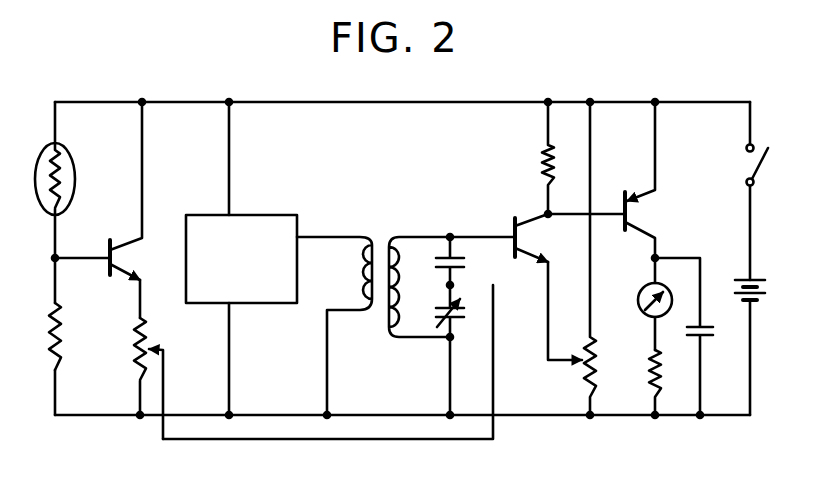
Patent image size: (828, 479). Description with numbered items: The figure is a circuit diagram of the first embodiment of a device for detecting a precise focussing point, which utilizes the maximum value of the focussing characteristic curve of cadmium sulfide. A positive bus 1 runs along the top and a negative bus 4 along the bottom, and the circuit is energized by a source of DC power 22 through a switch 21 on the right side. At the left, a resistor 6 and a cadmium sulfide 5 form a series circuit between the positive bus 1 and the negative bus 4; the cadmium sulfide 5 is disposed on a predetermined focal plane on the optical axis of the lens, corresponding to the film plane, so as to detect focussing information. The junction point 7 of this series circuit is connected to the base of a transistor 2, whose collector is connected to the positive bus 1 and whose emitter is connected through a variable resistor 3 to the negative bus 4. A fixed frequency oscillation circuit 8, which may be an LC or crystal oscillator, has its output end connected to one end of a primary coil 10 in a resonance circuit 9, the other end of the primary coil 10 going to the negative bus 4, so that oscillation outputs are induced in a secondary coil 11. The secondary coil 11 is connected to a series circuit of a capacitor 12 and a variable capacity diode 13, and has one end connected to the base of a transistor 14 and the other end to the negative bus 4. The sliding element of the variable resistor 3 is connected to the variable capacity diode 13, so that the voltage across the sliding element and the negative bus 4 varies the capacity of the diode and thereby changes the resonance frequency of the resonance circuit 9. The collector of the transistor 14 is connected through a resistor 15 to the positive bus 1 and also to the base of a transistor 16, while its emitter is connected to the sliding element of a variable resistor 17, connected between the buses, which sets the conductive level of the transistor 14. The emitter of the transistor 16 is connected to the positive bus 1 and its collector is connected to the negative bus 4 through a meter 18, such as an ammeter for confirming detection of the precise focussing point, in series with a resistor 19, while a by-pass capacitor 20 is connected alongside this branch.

The positive bus 1 is at (360, 101).
The transistor 2 is at (116, 262).
The variable resistor 3 is at (146, 337).
The negative bus 4 is at (551, 418).
The cadmium sulfide 5 is at (60, 148).
The resistor 6 is at (48, 340).
The junction point 7 is at (52, 258).
The fixed frequency oscillation circuit 8 is at (297, 222).
The resonance circuit 9 is at (420, 220).
The primary coil 10 is at (356, 271).
The secondary coil 11 is at (386, 322).
The capacitor 12 is at (457, 268).
The variable capacity diode 13 is at (453, 330).
The transistor 14 is at (511, 224).
The resistor 15 is at (545, 168).
The transistor 16 is at (628, 199).
The variable resistor 17 is at (584, 374).
The meter 18 is at (641, 290).
The resistor 19 is at (648, 386).
The by-pass capacitor 20 is at (700, 338).
The switch 21 is at (748, 176).
The source of DC power 22 is at (750, 277).